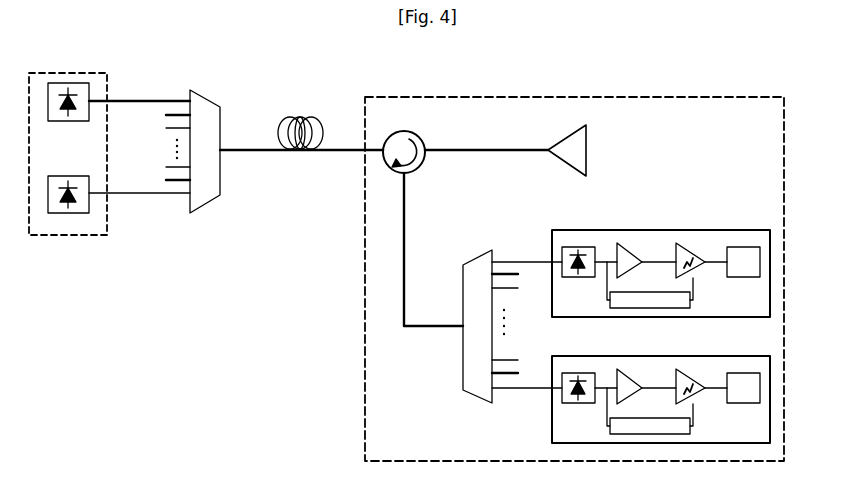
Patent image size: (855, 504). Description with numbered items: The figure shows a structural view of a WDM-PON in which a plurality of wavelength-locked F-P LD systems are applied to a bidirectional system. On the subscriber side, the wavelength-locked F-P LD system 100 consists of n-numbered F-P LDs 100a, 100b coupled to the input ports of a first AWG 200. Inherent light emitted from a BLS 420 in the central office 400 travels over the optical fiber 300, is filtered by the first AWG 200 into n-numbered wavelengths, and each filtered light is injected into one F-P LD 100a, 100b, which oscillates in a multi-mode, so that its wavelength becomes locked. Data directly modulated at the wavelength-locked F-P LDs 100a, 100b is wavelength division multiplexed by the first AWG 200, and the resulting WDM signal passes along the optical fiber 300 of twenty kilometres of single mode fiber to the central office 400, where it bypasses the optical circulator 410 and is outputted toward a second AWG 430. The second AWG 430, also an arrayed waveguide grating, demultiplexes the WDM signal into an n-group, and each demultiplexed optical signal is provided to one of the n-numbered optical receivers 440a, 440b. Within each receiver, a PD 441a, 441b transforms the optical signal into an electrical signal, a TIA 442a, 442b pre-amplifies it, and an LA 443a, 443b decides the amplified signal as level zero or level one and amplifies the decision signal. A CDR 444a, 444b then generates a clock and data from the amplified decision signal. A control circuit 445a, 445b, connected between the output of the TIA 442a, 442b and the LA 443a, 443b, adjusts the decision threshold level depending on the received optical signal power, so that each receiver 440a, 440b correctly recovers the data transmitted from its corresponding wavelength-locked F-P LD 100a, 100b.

The F-P LD 100 is at (91, 136).
The F-P LD 100a is at (53, 80).
The F-P LD 100b is at (90, 200).
The first AWG 200 is at (210, 92).
The optical fiber 300 is at (243, 147).
The central office 400 is at (753, 96).
The optical circulator 410 is at (412, 131).
The BLS 420 is at (588, 150).
The second AWG 430 is at (470, 262).
The optical receiver 440a is at (694, 247).
The optical receiver 440b is at (661, 410).
The PD 441a is at (582, 240).
The PD 441b is at (582, 366).
The TIA 442a is at (630, 248).
The TIA 442b is at (630, 374).
The LA 443a is at (692, 245).
The LA 443b is at (692, 371).
The CDR 444a is at (750, 246).
The CDR 444b is at (750, 372).
The control circuit 445a is at (693, 300).
The control circuit 445b is at (662, 434).